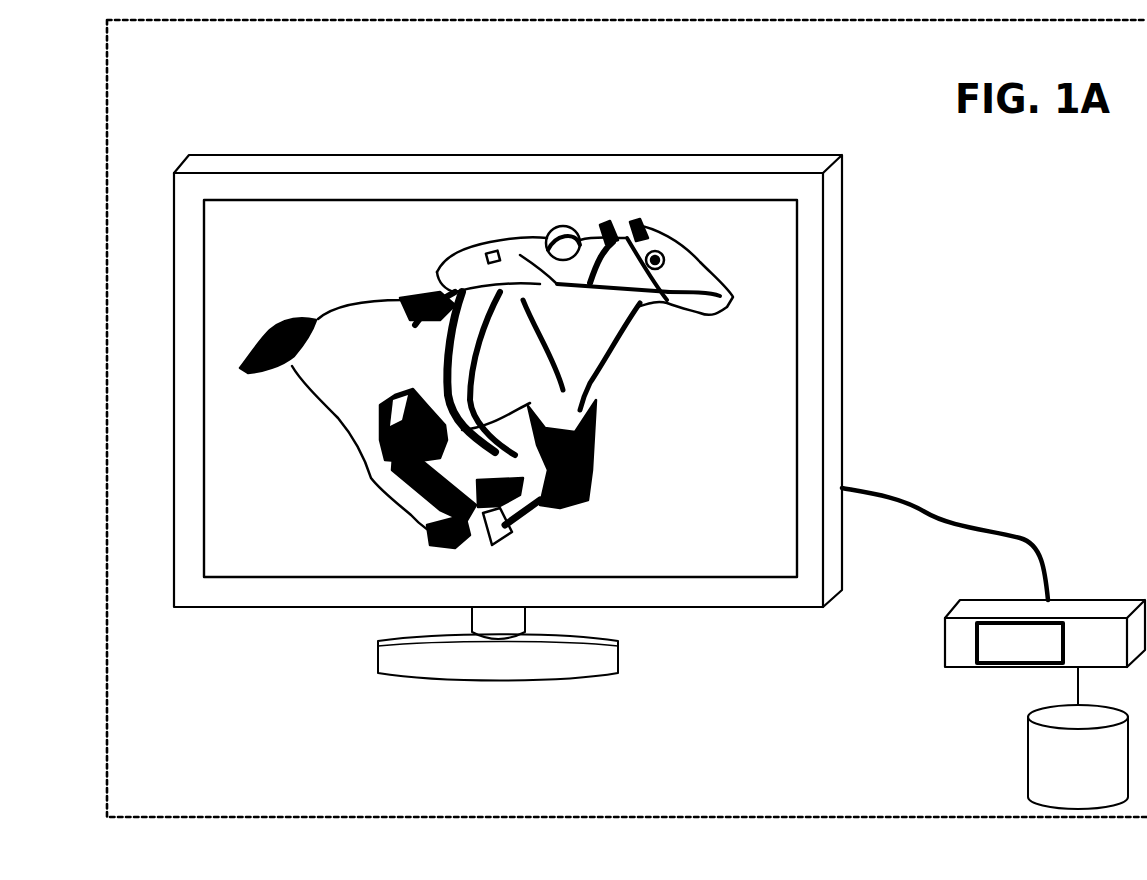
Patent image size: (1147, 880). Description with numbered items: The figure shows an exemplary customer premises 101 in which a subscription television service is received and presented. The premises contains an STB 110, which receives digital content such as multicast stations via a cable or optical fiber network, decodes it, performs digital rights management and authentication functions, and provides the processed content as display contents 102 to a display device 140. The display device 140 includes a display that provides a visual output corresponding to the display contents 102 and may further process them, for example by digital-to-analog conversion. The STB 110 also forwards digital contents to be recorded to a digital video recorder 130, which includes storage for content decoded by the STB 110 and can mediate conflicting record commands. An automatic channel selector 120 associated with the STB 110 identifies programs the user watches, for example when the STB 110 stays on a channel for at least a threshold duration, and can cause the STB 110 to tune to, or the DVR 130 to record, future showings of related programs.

The customer premises 101 is at (823, 54).
The display device 140 is at (316, 155).
The display contents 102 is at (691, 544).
The STB 110 is at (1110, 599).
The automatic channel selector 120 is at (1003, 652).
The digital video recorder (DVR) 130 is at (1061, 787).